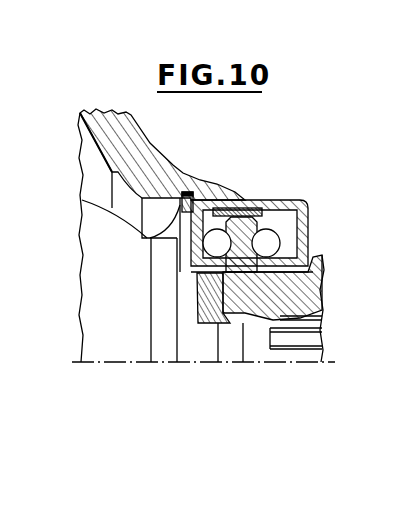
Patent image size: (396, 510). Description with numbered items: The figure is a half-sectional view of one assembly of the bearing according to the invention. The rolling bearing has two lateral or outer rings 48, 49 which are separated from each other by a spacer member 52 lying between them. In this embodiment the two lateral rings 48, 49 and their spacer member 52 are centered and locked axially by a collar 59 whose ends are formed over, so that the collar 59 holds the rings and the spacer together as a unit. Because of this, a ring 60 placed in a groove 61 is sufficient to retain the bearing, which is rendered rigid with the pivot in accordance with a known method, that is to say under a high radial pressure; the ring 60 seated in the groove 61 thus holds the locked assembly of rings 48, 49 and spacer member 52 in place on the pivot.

The lateral ring 48 is at (174, 256).
The lateral ring 49 is at (288, 243).
The spacer member 52 is at (258, 199).
The collar 59 is at (235, 197).
The ring 60 is at (147, 245).
The groove 61 is at (193, 194).